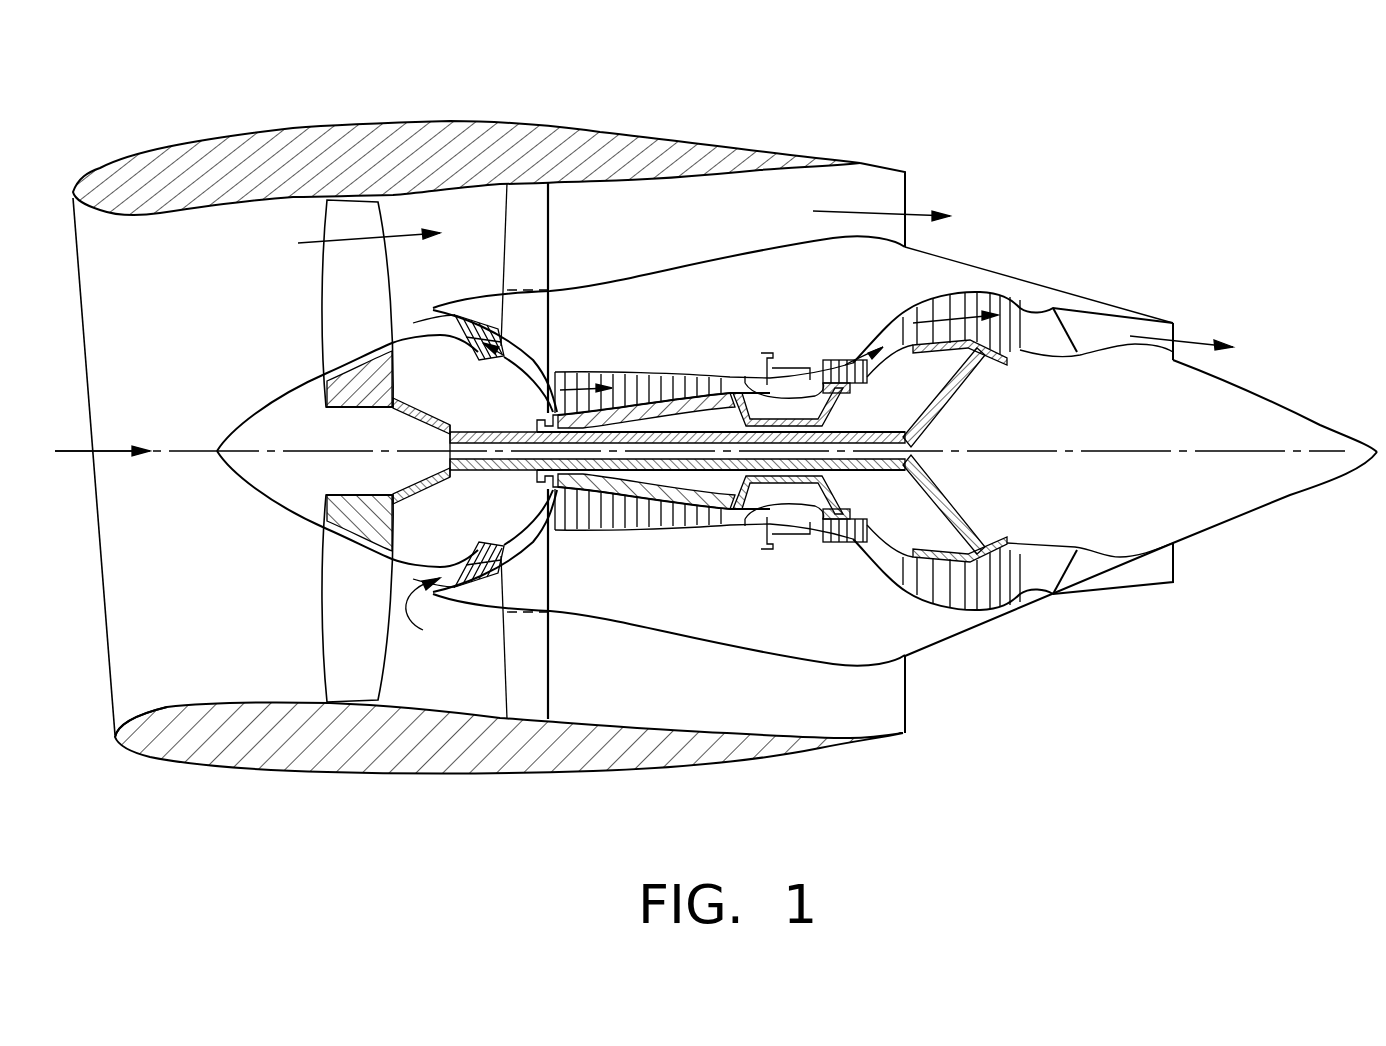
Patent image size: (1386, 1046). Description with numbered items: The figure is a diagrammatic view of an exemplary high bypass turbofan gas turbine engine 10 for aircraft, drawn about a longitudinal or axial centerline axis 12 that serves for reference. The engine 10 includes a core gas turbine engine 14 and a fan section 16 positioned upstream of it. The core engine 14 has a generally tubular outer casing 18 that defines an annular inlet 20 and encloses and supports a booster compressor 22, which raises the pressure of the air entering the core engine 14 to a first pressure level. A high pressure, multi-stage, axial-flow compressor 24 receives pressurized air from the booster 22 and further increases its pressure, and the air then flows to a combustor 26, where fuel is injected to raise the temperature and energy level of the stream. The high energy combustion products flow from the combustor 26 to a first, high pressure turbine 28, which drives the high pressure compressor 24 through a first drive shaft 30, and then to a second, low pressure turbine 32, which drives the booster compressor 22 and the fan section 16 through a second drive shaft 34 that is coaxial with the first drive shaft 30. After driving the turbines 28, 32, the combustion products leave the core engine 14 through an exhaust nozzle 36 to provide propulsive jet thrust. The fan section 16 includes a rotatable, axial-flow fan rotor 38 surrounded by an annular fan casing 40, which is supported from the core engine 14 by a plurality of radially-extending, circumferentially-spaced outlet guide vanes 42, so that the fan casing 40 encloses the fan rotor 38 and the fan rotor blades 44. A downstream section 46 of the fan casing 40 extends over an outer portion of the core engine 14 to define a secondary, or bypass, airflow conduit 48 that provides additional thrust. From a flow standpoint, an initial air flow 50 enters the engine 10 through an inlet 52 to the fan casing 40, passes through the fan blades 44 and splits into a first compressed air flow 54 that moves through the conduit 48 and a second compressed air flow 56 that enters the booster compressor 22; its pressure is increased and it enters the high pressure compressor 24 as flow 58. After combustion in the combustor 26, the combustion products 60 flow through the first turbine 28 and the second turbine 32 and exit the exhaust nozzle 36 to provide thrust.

The gas turbine engine 10 is at (1080, 152).
The longitudinal or axial centerline axis 12 is at (1105, 450).
The core gas turbine engine 14 is at (742, 325).
The fan section 16 is at (489, 393).
The outer casing 18 is at (740, 648).
The annular inlet 20 is at (431, 611).
The booster compressor 22 is at (503, 548).
The high pressure compressor 24 is at (588, 518).
The combustor 26 is at (780, 532).
The first turbine 28 is at (856, 546).
The first drive shaft 30 is at (835, 400).
The second turbine 32 is at (1007, 603).
The second drive shaft 34 is at (515, 445).
The exhaust nozzle 36 is at (1177, 325).
The fan rotor 38 is at (385, 408).
The fan casing 40 is at (493, 745).
The outlet guide vanes 42 is at (549, 230).
The fan rotor blades 44 is at (322, 632).
The downstream section 46 is at (795, 148).
The bypass airflow conduit 48 is at (677, 229).
The initial air flow 50 is at (105, 440).
The inlet 52 is at (115, 728).
The first compressed air flow 54 is at (342, 240).
The second compressed air flow 56 is at (418, 318).
The compressed air flow to high pressure compressor 58 is at (576, 370).
The combustion products 60 is at (838, 362).